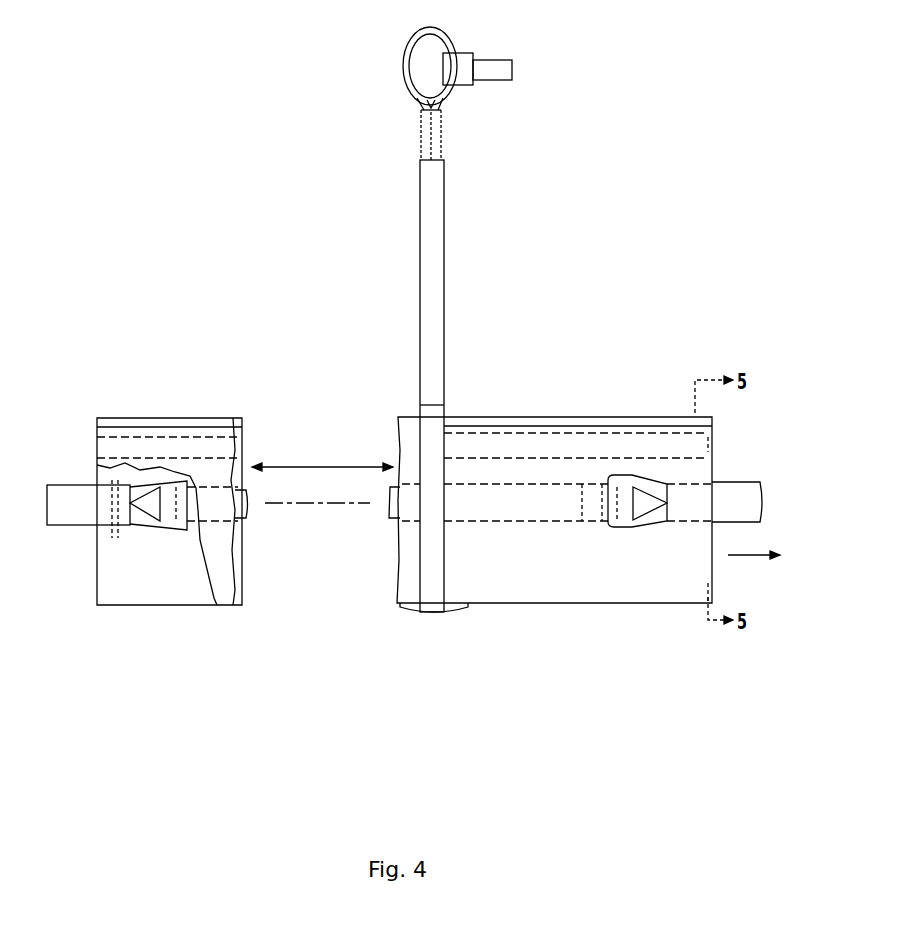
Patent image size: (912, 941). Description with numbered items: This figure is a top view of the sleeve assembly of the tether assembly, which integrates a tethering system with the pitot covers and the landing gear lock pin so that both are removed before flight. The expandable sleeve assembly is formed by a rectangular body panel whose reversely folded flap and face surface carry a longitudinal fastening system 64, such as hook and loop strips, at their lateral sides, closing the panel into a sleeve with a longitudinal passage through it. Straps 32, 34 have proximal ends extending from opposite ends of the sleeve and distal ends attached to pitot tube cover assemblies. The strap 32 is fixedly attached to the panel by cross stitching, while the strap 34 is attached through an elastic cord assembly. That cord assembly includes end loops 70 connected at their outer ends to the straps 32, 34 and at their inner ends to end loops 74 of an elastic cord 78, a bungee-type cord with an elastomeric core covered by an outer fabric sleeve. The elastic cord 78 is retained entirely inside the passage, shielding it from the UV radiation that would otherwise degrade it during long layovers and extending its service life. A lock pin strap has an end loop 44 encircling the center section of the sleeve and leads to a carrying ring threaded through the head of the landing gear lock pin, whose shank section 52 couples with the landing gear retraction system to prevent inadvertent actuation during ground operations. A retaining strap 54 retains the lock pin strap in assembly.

The strap 32 is at (62, 492).
The strap 34 is at (740, 497).
The end loop 44 is at (435, 580).
The shank section 52 is at (498, 84).
The retaining strap 54 is at (417, 611).
The longitudinal fastening system 64 is at (630, 440).
The end loops 70 is at (648, 490).
The end loops 74 is at (593, 490).
The elastic cord 78 is at (396, 505).